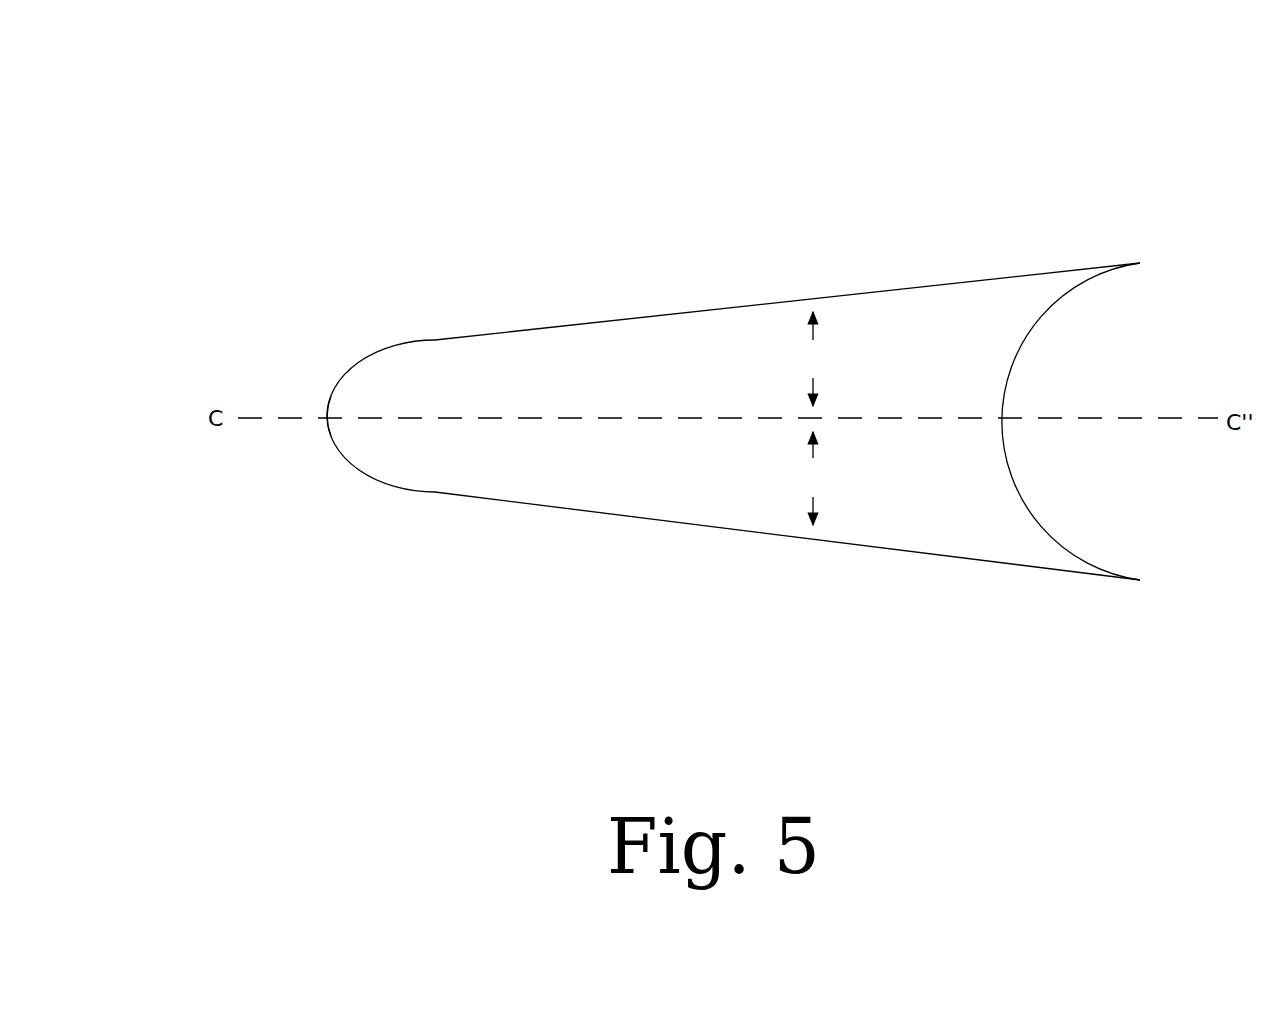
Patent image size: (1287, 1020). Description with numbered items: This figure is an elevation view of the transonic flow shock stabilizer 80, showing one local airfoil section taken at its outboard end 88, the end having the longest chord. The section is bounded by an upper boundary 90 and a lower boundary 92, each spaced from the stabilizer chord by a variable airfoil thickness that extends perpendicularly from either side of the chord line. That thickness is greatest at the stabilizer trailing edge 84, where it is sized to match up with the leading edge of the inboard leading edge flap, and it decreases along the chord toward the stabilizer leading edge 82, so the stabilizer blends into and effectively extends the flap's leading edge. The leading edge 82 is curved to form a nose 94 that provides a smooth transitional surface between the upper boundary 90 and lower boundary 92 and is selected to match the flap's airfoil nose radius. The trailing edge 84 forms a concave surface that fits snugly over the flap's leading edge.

The transonic flow shock stabilizer 80 is at (764, 122).
The stabilizer leading edge 82 is at (320, 385).
The stabilizer trailing edge 84 is at (1129, 246).
The outboard end 88 is at (570, 487).
The upper boundary 90 is at (455, 329).
The lower boundary 92 is at (490, 508).
The nose 94 is at (318, 438).